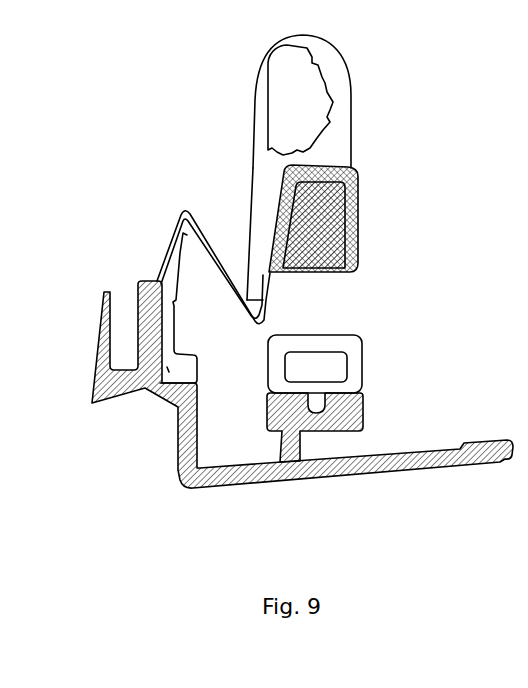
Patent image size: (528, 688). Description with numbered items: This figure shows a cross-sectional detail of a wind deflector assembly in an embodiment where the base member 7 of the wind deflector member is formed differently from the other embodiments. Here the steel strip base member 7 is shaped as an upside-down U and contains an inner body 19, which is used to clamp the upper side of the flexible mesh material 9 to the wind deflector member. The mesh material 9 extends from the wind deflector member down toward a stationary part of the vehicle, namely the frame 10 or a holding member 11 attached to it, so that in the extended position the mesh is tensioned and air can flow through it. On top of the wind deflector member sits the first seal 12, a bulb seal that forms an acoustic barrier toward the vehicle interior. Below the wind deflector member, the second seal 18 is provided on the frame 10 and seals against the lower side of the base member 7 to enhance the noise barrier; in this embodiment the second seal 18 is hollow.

The base member 7 is at (362, 210).
The mesh material 9 is at (205, 218).
The frame 10 is at (210, 493).
The holding member 11 is at (155, 402).
The first seal 12 is at (350, 88).
The second seal 18 is at (353, 363).
The inner body 19 is at (372, 242).